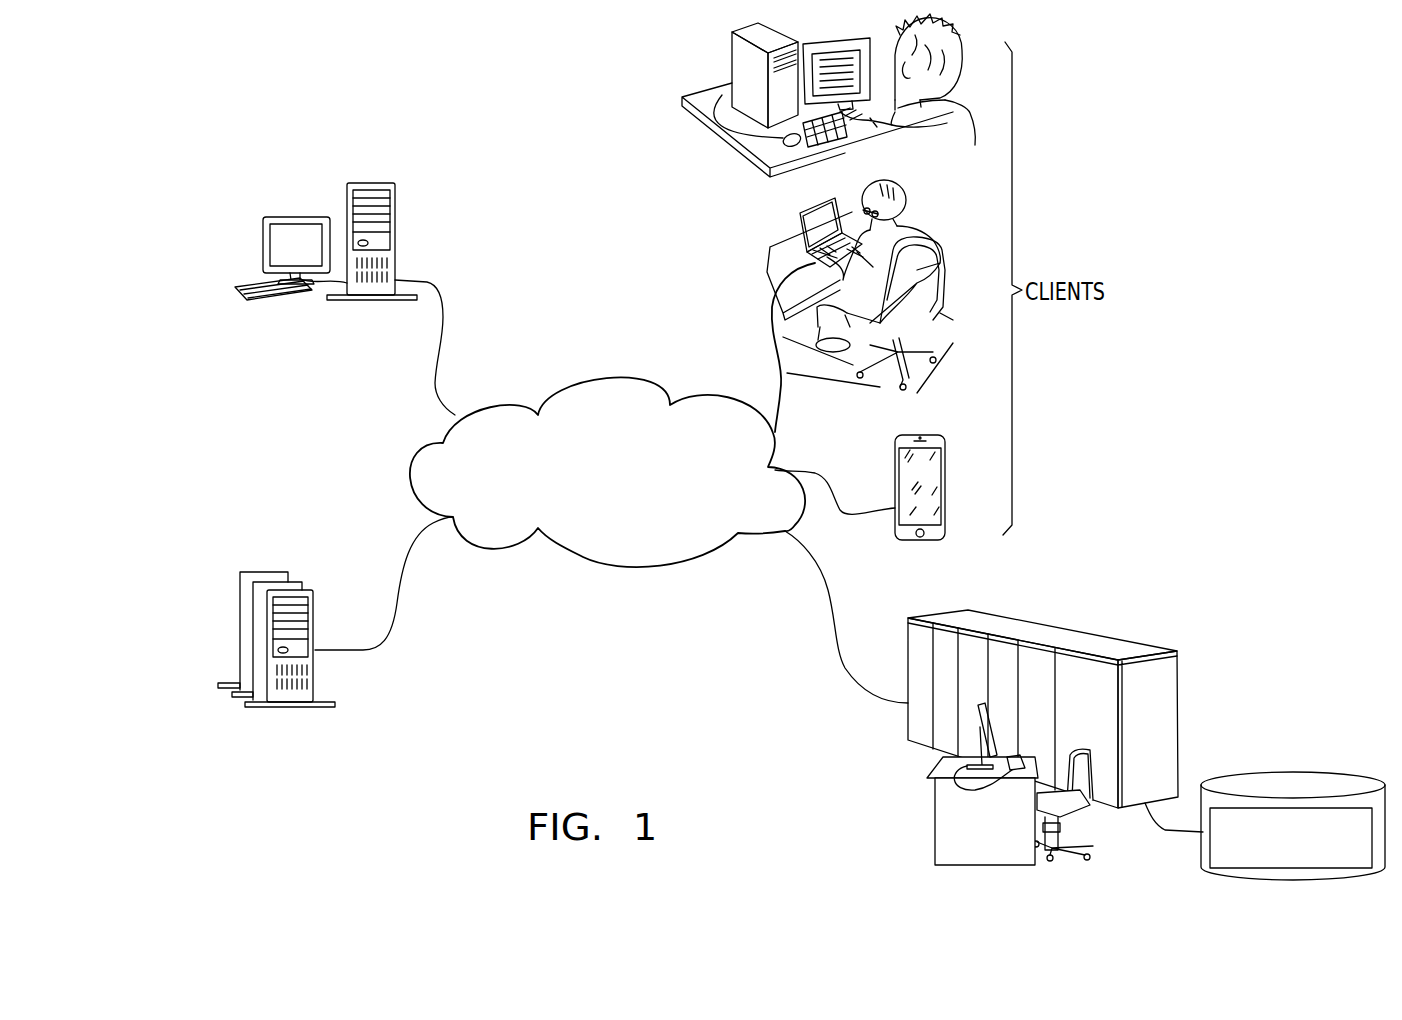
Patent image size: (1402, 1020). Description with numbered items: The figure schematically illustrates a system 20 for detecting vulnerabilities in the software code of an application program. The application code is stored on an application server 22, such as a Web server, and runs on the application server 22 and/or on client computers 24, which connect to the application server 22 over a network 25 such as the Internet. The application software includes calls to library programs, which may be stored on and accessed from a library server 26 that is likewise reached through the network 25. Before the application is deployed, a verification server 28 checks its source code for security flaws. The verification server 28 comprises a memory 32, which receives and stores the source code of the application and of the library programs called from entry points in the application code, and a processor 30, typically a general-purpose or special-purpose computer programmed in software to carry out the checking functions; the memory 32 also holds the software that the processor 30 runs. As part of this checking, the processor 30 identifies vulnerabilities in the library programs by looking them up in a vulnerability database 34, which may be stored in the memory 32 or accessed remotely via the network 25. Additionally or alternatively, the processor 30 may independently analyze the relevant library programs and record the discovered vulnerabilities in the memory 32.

The system 20 is at (166, 122).
The application server 22 is at (396, 202).
The client computers 24 is at (732, 65).
The network 25 is at (583, 557).
The library server 26 is at (290, 575).
The verification server 28 is at (1387, 603).
The processor 30 is at (1178, 677).
The memory 32 is at (1286, 847).
The vulnerability database 34 is at (1345, 870).